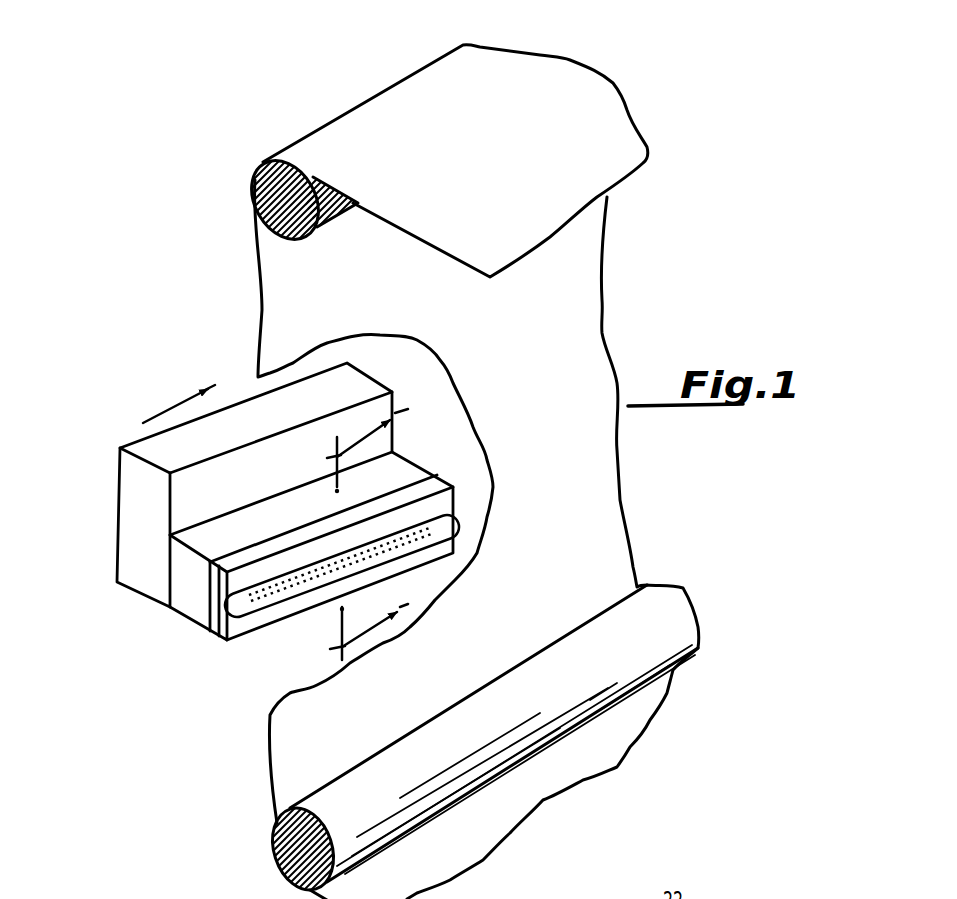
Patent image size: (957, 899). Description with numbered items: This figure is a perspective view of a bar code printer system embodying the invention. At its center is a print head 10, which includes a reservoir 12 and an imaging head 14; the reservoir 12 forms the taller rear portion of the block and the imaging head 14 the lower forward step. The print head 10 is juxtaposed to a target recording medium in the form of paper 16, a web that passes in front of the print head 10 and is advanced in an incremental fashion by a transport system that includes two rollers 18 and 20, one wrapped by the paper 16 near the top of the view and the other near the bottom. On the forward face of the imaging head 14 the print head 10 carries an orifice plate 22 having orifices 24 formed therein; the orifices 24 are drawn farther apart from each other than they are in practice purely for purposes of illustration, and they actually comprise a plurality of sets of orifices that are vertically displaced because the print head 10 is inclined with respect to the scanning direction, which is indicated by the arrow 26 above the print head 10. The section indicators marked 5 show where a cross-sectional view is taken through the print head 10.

The print head 10 is at (267, 523).
The reservoir 12 is at (132, 500).
The imaging head 14 is at (190, 603).
The paper 16 is at (600, 486).
The roller 18 is at (290, 840).
The roller 20 is at (275, 185).
The orifice plate 22 is at (443, 527).
The orifices 24 is at (299, 598).
The arrow 26 is at (182, 396).
The section line 5- 5 is at (377, 526).